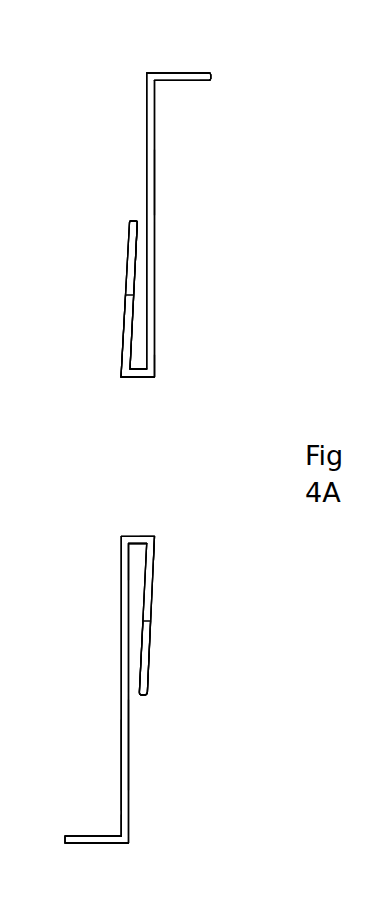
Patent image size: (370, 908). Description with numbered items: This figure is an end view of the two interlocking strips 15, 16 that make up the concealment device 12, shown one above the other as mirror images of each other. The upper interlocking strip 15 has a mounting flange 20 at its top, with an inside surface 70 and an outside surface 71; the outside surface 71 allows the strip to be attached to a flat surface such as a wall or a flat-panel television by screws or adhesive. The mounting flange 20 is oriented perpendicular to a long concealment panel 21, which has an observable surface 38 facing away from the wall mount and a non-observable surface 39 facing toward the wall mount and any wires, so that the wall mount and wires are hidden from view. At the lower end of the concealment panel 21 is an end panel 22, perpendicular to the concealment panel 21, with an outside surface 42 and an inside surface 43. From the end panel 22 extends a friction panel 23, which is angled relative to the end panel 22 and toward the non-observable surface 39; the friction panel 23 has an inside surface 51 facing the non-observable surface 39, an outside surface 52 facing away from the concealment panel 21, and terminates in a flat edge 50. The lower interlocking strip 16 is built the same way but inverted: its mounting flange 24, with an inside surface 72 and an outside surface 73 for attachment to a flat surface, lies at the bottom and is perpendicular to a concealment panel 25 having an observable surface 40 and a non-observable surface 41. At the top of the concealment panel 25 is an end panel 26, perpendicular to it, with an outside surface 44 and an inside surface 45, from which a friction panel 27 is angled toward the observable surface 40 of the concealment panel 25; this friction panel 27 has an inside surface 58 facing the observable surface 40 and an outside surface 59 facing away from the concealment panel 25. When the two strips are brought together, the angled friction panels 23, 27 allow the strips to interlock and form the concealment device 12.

The concealment device 12 is at (137, 107).
The interlocking strip 15 is at (217, 77).
The interlocking strip 16 is at (65, 845).
The mounting flange 20 is at (167, 70).
The concealment panel 21 is at (162, 123).
The end panel 22 is at (137, 373).
The friction panel 23 is at (125, 307).
The mounting flange 24 is at (107, 843).
The concealment panel 25 is at (122, 675).
The end panel 26 is at (144, 533).
The friction panel 27 is at (156, 575).
The observable surface 38 is at (162, 172).
The non-observable surface 39 is at (145, 153).
The observable surface 40 is at (132, 732).
The non-observable surface 41 is at (120, 767).
The outside surface 42 is at (148, 377).
The inside surface 43 is at (135, 367).
The outside surface 44 is at (156, 535).
The inside surface 45 is at (136, 547).
The flat edge 50 is at (134, 219).
The inside surface 51 is at (135, 267).
The outside surface 52 is at (130, 245).
The inside surface 58 is at (147, 622).
The outside surface 59 is at (150, 649).
The inside surface 70 is at (205, 81).
The outside surface 71 is at (198, 76).
The inside surface 72 is at (97, 833).
The outside surface 73 is at (95, 843).